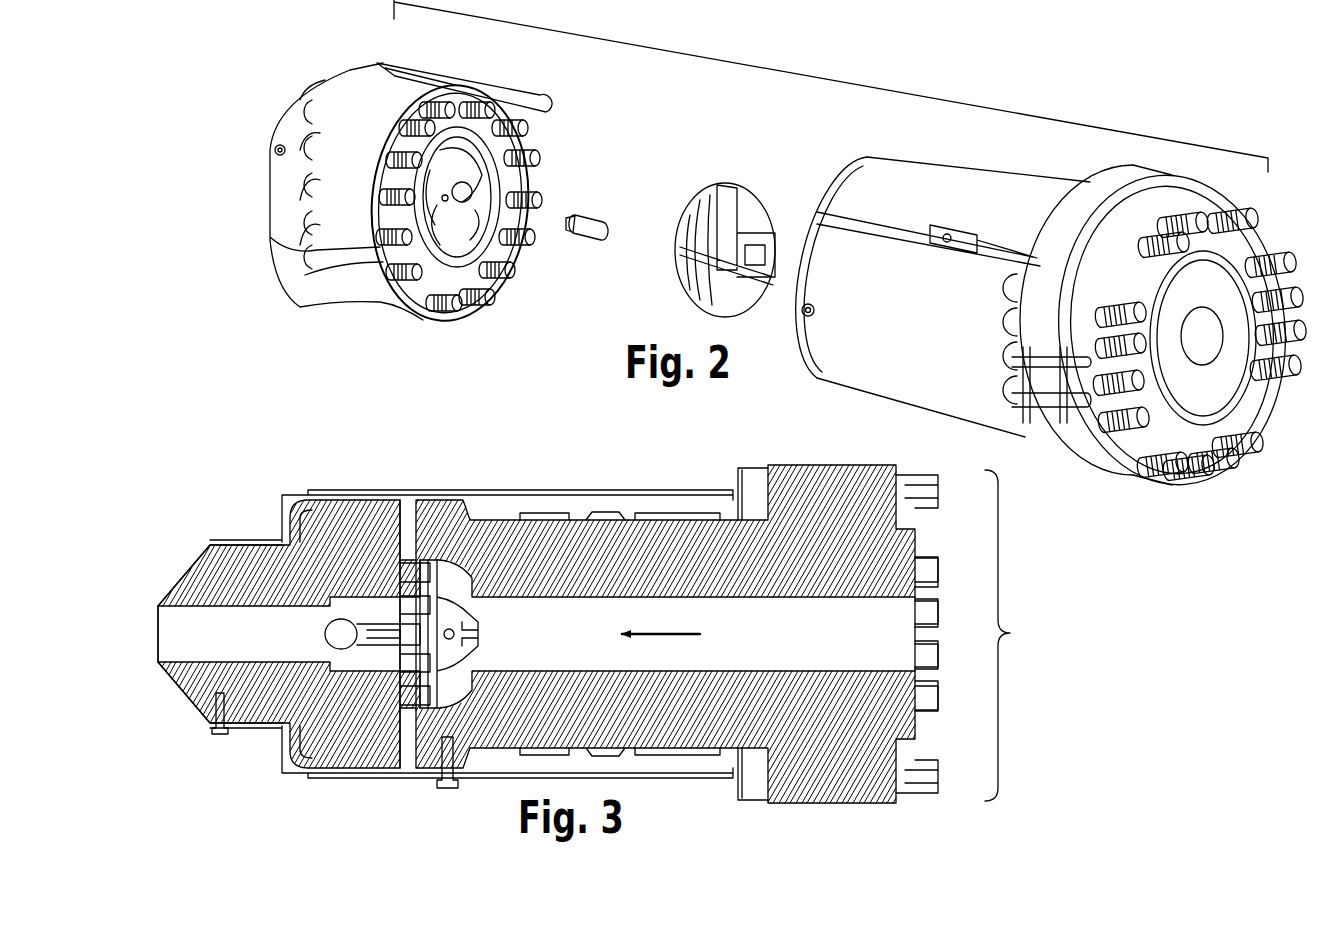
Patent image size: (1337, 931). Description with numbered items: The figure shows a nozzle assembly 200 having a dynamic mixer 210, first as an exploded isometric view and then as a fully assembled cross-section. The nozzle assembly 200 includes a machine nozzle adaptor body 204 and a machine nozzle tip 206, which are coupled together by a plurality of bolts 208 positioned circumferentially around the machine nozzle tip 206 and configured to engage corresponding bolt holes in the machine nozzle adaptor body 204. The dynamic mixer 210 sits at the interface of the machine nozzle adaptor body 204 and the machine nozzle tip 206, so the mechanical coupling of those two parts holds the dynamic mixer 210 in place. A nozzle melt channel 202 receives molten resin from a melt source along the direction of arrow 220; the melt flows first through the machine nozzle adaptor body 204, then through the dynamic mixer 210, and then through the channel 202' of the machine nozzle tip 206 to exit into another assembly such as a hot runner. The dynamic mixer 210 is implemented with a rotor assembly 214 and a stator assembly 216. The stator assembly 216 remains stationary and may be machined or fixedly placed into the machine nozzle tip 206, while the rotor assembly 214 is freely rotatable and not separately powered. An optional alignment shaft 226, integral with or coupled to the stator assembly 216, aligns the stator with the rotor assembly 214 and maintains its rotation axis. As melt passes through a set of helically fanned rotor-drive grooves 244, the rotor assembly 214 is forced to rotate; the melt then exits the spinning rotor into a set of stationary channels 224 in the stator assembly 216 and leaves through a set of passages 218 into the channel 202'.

In FIG. 2, the nozzle assembly 200 is at (781, 44).
In FIG. 3, the nozzle assembly 200 is at (1023, 635).
In FIG. 2, the nozzle melt channel 202 is at (1168, 329).
In FIG. 3, the nozzle melt channel 202 is at (939, 715).
In FIG. 3, the channel of machine nozzle tip 202' is at (162, 615).
In FIG. 2, the machine nozzle adaptor body 204 is at (977, 217).
In FIG. 3, the machine nozzle adaptor body 204 is at (690, 732).
In FIG. 2, the machine nozzle tip 206 is at (335, 152).
In FIG. 3, the machine nozzle tip 206 is at (212, 567).
In FIG. 2, the bolt 208 is at (385, 255).
In FIG. 2, the dynamic mixer 210 is at (708, 182).
In FIG. 3, the dynamic mixer 210 is at (430, 645).
In FIG. 2, the rotor assembly 214 is at (712, 232).
In FIG. 3, the rotor assembly 214 is at (447, 580).
In FIG. 2, the stator assembly 216 is at (452, 118).
In FIG. 3, the stator assembly 216 is at (405, 600).
In FIG. 2, the passages 218 is at (437, 280).
In FIG. 3, the arrow 220 is at (672, 606).
In FIG. 2, the stationary channels 224 is at (487, 176).
In FIG. 2, the alignment shaft 226 is at (597, 236).
In FIG. 3, the alignment shaft 226 is at (407, 637).
In FIG. 2, the rotor-drive grooves 244 is at (735, 180).